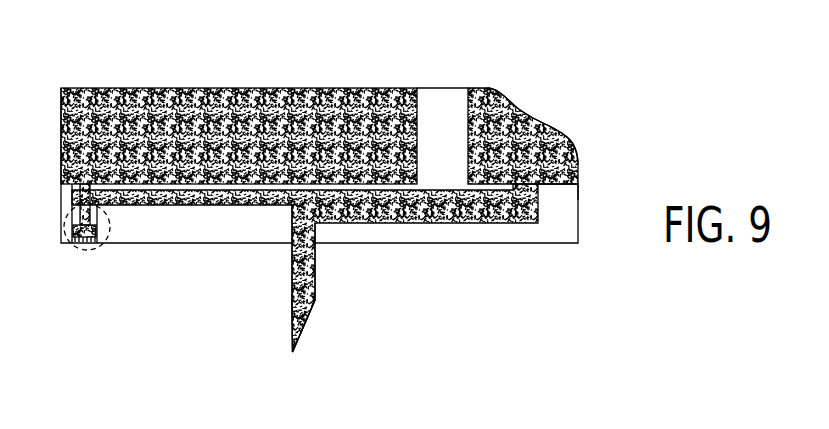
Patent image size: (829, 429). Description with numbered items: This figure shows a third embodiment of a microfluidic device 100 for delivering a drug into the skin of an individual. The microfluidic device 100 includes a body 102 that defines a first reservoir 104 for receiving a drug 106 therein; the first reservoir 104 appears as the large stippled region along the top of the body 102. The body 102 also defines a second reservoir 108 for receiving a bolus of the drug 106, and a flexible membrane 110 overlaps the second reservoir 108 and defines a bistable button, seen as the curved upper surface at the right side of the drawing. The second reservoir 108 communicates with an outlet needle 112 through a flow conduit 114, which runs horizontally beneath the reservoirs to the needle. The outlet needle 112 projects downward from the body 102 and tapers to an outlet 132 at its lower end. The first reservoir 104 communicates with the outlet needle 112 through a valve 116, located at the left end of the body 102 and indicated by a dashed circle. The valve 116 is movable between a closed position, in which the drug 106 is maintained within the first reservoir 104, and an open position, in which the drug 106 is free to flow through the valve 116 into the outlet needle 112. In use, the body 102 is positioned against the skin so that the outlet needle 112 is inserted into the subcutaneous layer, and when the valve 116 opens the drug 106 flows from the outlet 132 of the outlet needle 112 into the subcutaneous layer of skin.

The microfluidic device 100 is at (327, 214).
The body 102 is at (557, 243).
The first reservoir 104 is at (342, 87).
The drug 106 is at (135, 117).
The second reservoir 108 is at (570, 185).
The flexible membrane 110 is at (547, 122).
The outlet needle 112 is at (288, 275).
The flow conduit 114 is at (468, 215).
The valve 116 is at (58, 218).
The outlet 132 is at (300, 333).